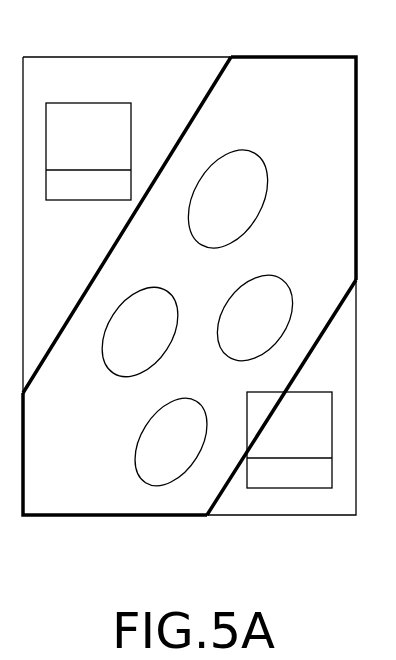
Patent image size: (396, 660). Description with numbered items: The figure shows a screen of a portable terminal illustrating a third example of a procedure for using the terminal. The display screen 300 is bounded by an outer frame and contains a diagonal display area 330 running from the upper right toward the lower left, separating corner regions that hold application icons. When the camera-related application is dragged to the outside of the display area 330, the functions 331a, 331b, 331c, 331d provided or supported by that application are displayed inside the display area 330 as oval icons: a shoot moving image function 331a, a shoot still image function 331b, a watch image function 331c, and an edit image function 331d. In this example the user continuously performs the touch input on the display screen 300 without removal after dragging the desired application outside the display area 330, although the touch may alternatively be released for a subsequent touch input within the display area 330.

The display screen 300 is at (191, 57).
The display area 330 is at (110, 252).
The function 331a is at (150, 289).
The function 331b is at (238, 150).
The function 331c is at (183, 398).
The function 331d is at (265, 277).